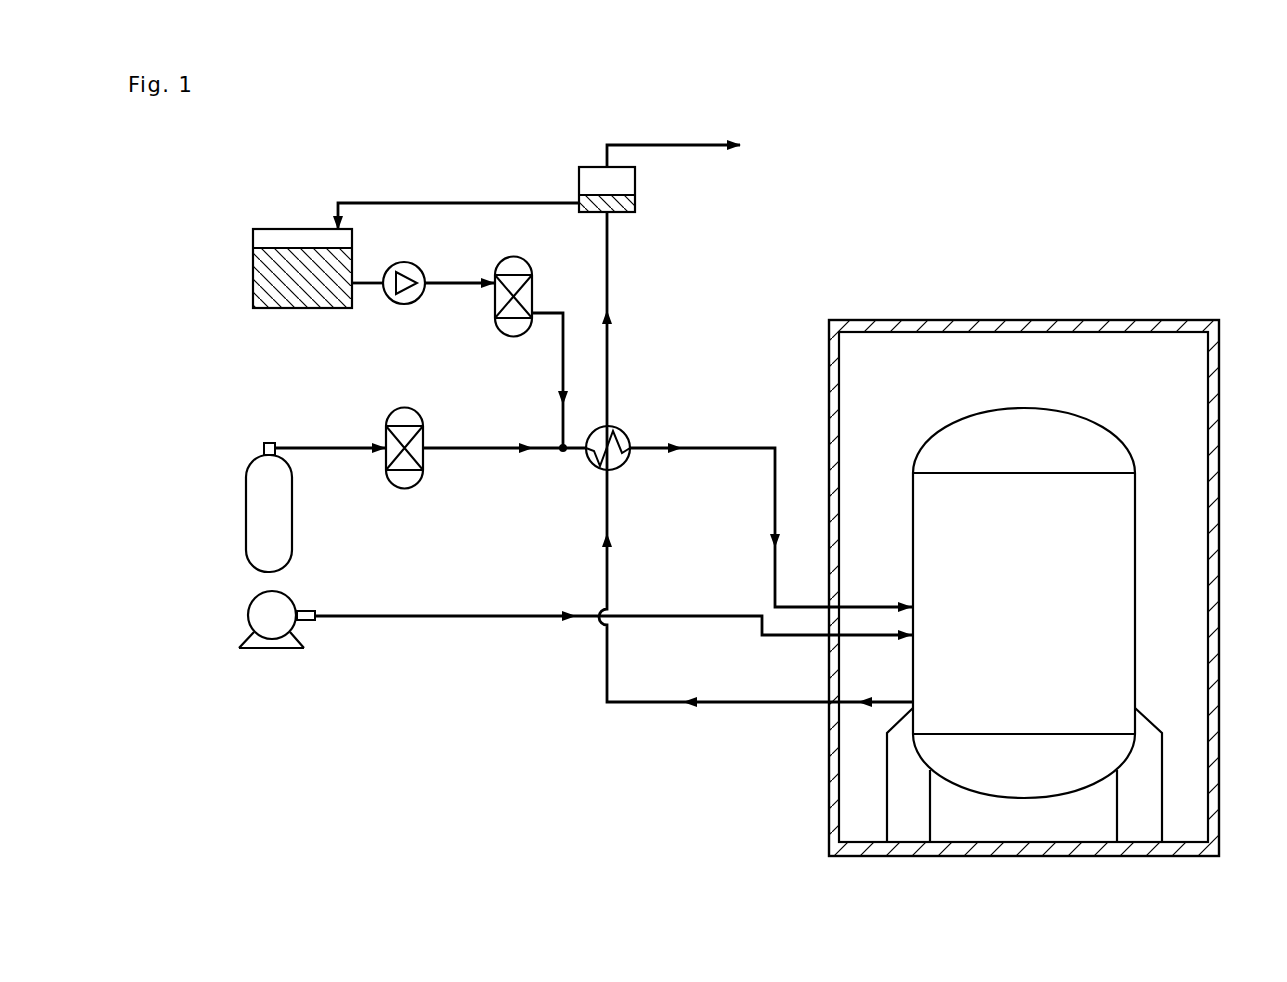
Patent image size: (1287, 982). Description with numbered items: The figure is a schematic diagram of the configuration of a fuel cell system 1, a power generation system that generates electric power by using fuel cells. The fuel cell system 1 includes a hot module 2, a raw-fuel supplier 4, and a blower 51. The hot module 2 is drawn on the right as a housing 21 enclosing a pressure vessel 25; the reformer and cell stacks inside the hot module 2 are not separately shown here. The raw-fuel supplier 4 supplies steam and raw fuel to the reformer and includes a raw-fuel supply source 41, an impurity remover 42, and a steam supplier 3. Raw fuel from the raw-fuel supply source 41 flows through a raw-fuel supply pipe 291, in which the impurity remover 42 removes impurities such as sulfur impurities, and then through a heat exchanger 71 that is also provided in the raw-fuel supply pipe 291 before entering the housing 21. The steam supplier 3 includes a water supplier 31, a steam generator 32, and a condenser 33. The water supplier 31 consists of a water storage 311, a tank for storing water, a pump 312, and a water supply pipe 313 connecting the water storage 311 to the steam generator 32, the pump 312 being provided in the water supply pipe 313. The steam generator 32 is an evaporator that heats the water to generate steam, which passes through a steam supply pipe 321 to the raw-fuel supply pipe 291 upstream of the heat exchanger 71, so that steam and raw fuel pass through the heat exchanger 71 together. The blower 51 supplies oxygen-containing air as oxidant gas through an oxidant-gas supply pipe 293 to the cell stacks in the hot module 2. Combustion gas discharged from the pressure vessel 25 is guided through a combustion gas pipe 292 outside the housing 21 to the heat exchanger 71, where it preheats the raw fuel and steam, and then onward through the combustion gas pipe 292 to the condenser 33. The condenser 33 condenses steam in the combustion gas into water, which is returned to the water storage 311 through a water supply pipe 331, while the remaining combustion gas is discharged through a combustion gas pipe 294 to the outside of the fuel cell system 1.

The fuel cell system 1 is at (262, 146).
The hot module 2 is at (1179, 293).
The housing 21 is at (1215, 466).
The pressure vessel 25 is at (1137, 490).
The steam supplier 3 is at (455, 170).
The water supplier 31 is at (313, 214).
The water storage 311 is at (295, 309).
The pump 312 is at (404, 262).
The water supply pipe 313 is at (458, 283).
The steam generator 32 is at (493, 310).
The steam supply pipe 321 is at (560, 372).
The condenser 33 is at (579, 186).
The water supply pipe 331 is at (538, 202).
The combustion gas pipe 294 is at (672, 150).
The raw-fuel supplier 4 is at (312, 418).
The raw-fuel supply source 41 is at (293, 492).
The impurity remover 42 is at (405, 407).
The blower 51 is at (275, 650).
The heat exchanger 71 is at (623, 466).
The raw-fuel supply pipe 291 is at (700, 447).
The combustion gas pipe 292 is at (605, 682).
The oxidant-gas supply pipe 293 is at (543, 614).